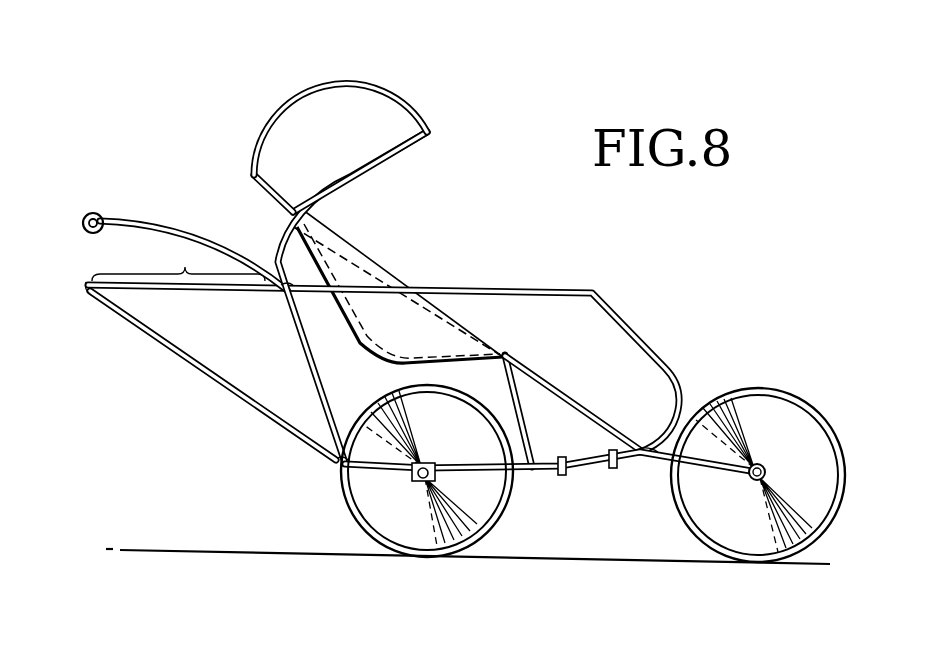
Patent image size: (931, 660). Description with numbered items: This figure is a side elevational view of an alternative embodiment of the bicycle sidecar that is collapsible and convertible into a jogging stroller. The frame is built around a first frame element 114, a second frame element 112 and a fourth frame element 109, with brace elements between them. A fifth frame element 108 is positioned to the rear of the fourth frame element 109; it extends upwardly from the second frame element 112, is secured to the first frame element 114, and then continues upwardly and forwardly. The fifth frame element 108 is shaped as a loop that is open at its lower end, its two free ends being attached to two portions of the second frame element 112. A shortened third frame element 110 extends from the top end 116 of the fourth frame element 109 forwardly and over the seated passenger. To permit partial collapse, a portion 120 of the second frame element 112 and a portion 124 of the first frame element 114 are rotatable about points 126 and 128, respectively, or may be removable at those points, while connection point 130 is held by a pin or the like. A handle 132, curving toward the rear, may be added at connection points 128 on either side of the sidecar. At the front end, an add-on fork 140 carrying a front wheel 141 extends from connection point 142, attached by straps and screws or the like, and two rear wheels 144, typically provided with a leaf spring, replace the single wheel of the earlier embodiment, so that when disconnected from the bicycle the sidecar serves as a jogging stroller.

The fifth frame element 108 is at (402, 149).
The fourth frame element 109 is at (546, 380).
The third frame element 110 is at (347, 76).
The second frame element 112 is at (535, 477).
The first frame element 114 is at (470, 288).
The top end 116 is at (252, 181).
The portion of second frame element 120 is at (186, 364).
The portion of first frame element 124 is at (160, 272).
The point 126 is at (335, 469).
The connection point 128 is at (287, 296).
The connection point 130 is at (90, 293).
The handle 132 is at (180, 230).
The add-on fork 140 is at (662, 470).
The front wheel 141 is at (770, 389).
The connection point 142 is at (640, 467).
The rear wheels 144 is at (411, 549).